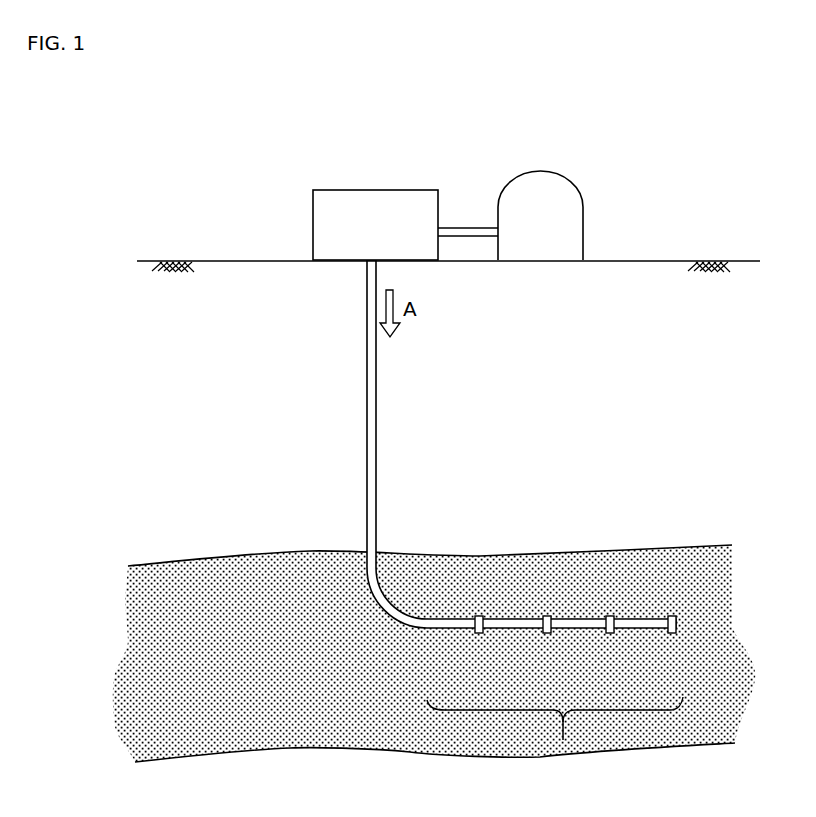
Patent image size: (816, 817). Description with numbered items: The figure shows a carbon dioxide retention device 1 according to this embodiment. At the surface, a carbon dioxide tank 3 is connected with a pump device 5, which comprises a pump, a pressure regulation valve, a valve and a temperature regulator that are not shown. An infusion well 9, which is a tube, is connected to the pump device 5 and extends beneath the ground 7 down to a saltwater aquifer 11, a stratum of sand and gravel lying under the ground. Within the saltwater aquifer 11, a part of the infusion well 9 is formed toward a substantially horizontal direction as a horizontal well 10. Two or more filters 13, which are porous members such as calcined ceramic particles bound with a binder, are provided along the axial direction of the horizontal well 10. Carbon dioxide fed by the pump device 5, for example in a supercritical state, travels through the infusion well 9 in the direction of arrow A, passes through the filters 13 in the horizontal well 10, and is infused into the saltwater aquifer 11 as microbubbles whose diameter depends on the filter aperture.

The carbon dioxide retention device 1 is at (463, 174).
The carbon dioxide tank 3 is at (577, 225).
The pump device 5 is at (345, 205).
The ground 7 is at (217, 260).
The infusion well 9 is at (406, 447).
The horizontal well 10 is at (563, 740).
The saltwater aquifer 11 is at (227, 568).
The filter 13 is at (575, 543).